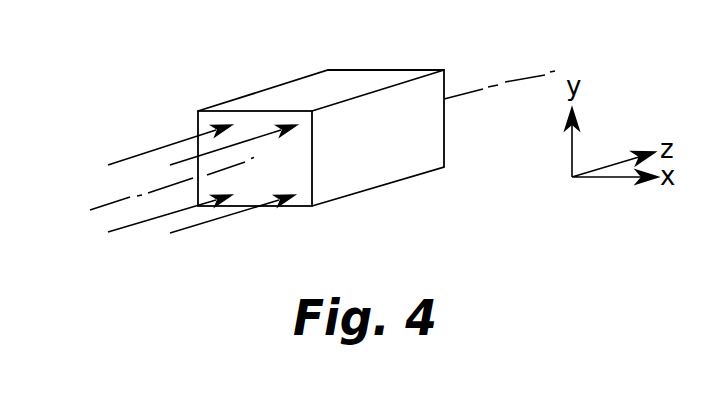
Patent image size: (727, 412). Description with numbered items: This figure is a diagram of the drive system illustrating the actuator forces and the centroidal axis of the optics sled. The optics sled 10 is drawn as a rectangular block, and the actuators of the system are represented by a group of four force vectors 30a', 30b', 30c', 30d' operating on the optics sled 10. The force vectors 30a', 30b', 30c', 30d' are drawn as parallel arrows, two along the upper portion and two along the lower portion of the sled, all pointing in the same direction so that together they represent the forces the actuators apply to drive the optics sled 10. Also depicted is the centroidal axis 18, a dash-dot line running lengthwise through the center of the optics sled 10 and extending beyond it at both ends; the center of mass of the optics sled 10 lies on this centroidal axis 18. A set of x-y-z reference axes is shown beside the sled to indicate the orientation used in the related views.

The optics sled 10 is at (378, 69).
The centroidal axis 18 is at (92, 208).
The force vector 30a' is at (170, 125).
The force vector 30b' is at (233, 95).
The force vector 30c' is at (232, 238).
The force vector 30d' is at (170, 245).